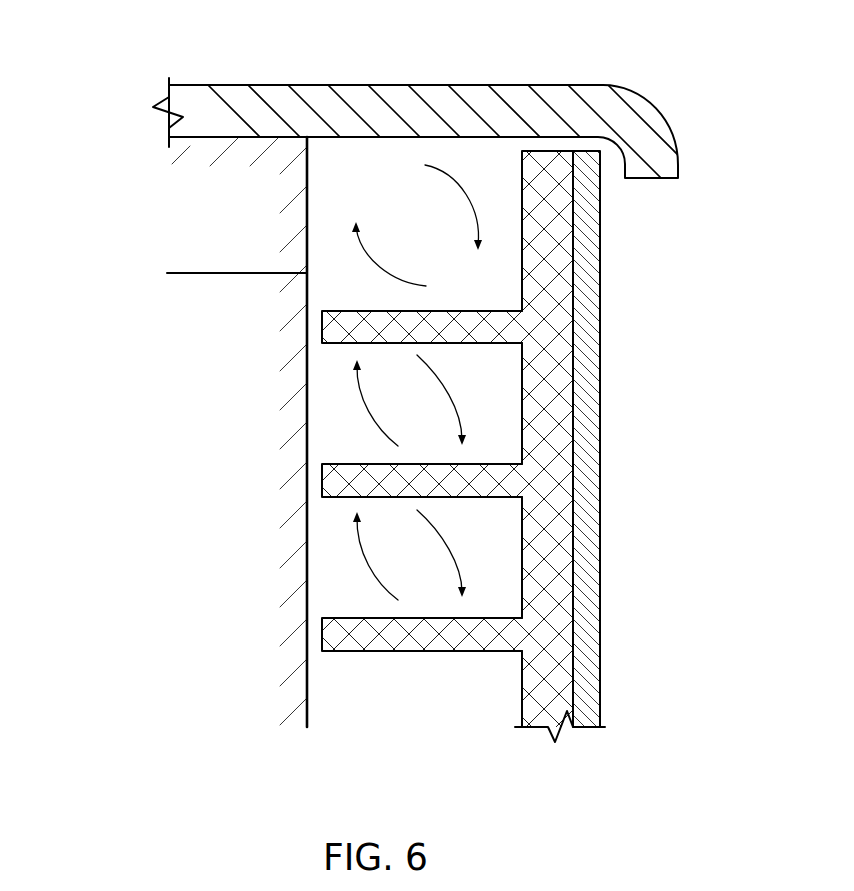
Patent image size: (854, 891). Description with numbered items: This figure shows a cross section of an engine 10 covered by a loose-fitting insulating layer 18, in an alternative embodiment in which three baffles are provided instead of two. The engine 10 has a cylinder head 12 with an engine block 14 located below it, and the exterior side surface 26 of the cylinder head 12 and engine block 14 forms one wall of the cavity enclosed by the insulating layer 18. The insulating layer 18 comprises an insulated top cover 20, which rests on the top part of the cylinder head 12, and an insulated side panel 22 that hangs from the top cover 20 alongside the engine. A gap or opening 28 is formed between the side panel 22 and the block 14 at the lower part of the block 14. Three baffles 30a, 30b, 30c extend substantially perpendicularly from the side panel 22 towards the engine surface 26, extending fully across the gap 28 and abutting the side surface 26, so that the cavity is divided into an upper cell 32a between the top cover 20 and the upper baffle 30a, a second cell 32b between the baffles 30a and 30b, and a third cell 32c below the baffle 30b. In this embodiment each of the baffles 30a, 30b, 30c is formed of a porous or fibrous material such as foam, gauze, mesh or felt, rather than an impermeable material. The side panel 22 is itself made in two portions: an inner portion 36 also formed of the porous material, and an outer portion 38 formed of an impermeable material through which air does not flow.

The engine 10 is at (100, 377).
The cylinder head 12 is at (243, 228).
The engine block 14 is at (241, 517).
The insulating layer 18 is at (666, 95).
The top cover 20 is at (553, 84).
The side panel 22 is at (600, 578).
The exterior side surface 26 is at (309, 163).
The gap 28 is at (424, 748).
The upper baffle 30a is at (485, 343).
The lower baffle 30b is at (473, 497).
The third baffle 30c is at (502, 652).
The upper cell 32a is at (435, 240).
The lower cell 32b is at (429, 415).
The third cell 32c is at (429, 568).
The inner portion 36 is at (560, 237).
The outer portion 38 is at (585, 298).